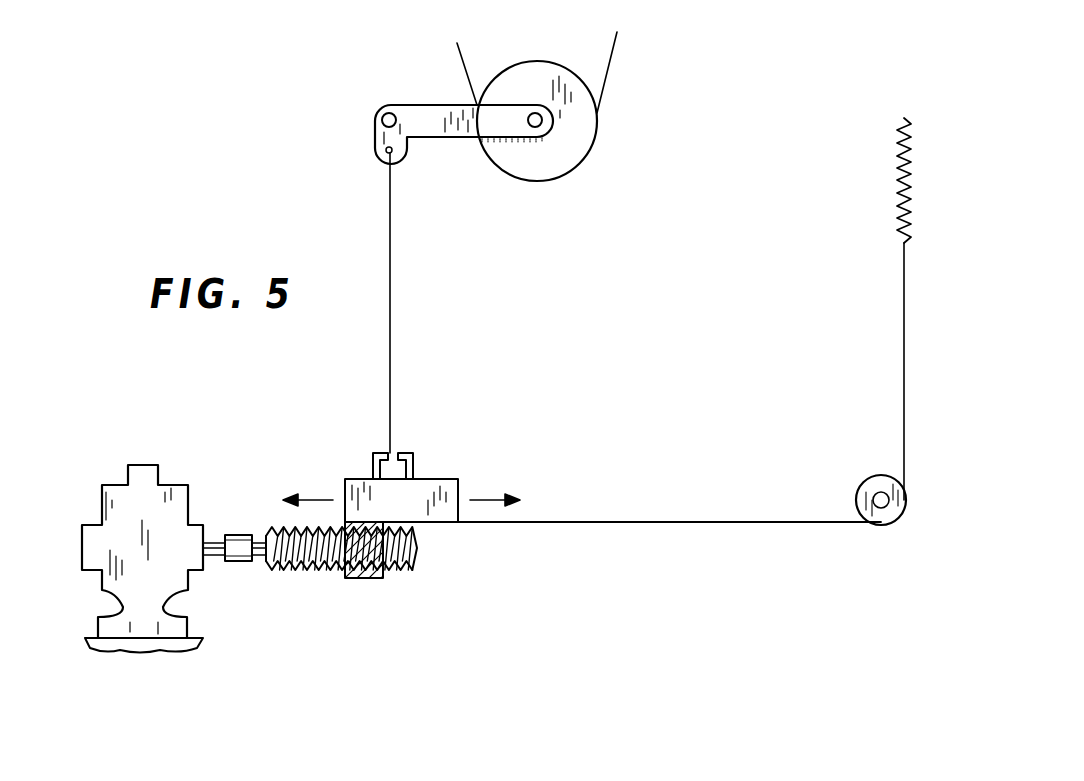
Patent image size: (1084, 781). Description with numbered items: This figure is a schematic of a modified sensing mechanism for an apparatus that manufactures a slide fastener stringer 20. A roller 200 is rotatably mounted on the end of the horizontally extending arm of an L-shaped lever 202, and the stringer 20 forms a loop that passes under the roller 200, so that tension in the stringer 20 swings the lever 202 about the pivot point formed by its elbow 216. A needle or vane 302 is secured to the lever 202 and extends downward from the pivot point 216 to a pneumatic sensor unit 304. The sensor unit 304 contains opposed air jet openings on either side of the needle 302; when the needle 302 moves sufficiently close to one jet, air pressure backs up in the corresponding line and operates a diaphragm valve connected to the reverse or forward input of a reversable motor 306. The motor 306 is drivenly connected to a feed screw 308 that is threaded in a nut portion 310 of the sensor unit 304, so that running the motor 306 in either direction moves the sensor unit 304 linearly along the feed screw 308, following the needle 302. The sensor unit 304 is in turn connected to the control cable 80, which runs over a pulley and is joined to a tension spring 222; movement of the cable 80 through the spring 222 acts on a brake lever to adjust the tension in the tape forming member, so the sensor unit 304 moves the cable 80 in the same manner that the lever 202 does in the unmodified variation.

The stringer 20 is at (613, 53).
The roller 200 is at (535, 73).
The L-shaped lever 202 is at (433, 120).
The elbow 216 is at (381, 118).
The tension spring 222 is at (900, 133).
The needle or vane 302 is at (392, 235).
The pneumatic sensor unit 304 is at (413, 490).
The reversable motor 306 is at (167, 513).
The feed screw 308 is at (417, 558).
The nut portion 310 is at (377, 577).
The control cable 80 is at (690, 522).